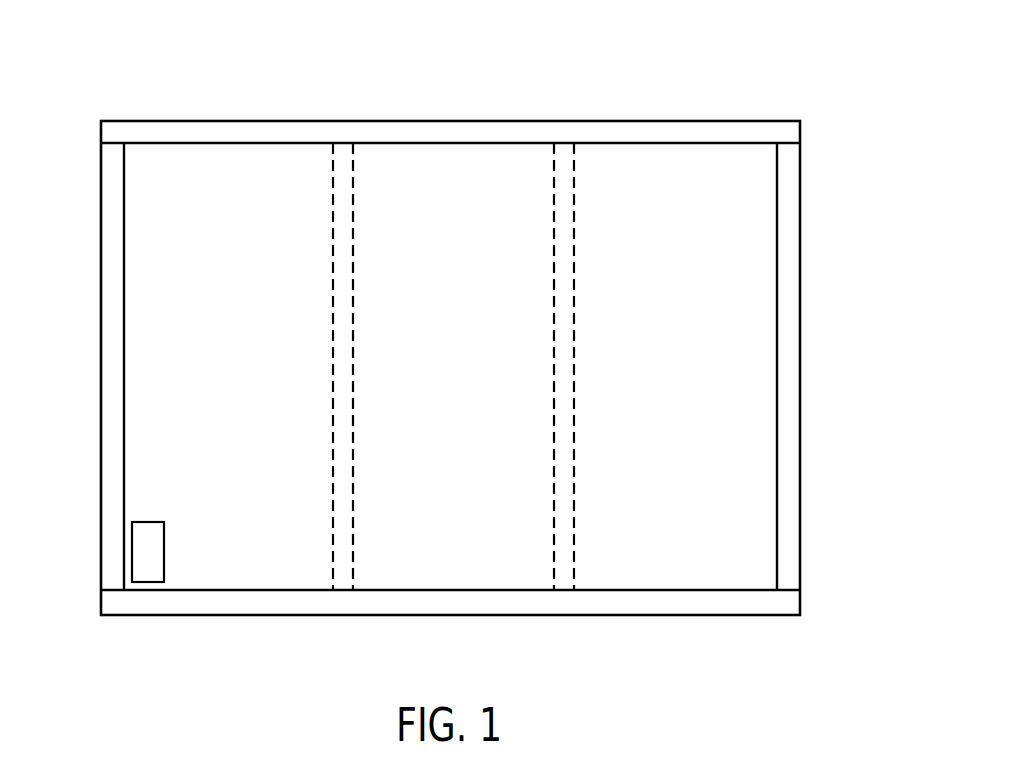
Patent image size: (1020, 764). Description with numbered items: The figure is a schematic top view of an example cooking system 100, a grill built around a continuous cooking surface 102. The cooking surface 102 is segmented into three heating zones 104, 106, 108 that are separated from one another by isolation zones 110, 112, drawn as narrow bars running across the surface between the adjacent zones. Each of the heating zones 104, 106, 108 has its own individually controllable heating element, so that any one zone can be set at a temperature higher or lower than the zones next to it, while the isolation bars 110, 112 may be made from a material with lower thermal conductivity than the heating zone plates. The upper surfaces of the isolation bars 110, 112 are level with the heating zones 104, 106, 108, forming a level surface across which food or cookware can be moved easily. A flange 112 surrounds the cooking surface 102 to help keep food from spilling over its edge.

The cooking system 100 is at (783, 54).
The continuous cooking surface 102 is at (753, 222).
The heating zone 104 is at (250, 378).
The heating zone 106 is at (472, 378).
The heating zone 108 is at (697, 378).
The isolation zone 110 is at (341, 586).
The isolation zone 112 is at (562, 586).